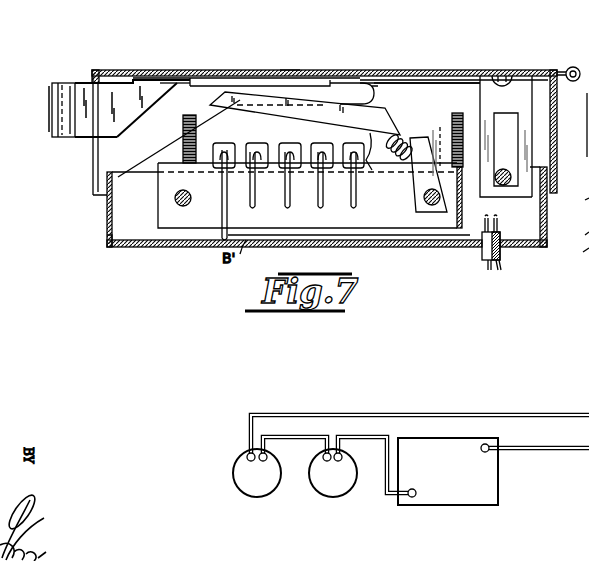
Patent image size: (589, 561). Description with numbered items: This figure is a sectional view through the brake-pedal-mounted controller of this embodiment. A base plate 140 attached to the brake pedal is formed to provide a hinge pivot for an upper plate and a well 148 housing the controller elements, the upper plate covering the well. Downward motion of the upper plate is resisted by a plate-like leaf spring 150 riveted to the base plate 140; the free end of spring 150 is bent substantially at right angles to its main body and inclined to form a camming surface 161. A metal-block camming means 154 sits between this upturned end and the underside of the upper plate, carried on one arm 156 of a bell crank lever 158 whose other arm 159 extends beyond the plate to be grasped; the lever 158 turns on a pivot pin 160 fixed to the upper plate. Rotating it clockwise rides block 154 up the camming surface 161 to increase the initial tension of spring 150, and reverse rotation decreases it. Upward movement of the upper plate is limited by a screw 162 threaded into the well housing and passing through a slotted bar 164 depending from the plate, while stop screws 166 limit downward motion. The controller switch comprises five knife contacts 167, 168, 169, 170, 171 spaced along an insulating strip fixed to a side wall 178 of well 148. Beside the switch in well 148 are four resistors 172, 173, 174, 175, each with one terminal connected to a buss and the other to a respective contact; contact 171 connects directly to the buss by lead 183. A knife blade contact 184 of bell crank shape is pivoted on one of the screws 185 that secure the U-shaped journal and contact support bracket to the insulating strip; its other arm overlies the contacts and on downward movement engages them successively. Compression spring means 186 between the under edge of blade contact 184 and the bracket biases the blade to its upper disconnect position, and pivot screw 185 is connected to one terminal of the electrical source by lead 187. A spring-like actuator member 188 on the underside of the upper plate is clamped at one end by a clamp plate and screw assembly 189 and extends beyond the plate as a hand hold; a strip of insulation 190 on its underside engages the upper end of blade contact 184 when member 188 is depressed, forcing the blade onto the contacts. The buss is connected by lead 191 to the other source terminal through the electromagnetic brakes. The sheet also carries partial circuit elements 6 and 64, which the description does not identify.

The base plate 140 is at (122, 247).
The well 148 is at (110, 235).
The leaf spring 150 is at (162, 154).
The camming means 154 is at (374, 93).
The arm of bell crank lever 156 is at (378, 84).
The bell crank lever 158 is at (293, 68).
The other arm of bell crank lever 159 is at (573, 67).
The pivot pin 160 is at (310, 76).
The camming surface 161 is at (333, 96).
The screw 162 is at (505, 185).
The slotted bar 164 is at (520, 108).
The stop screws 166 is at (188, 117).
The knife contact 167 is at (303, 180).
The knife contact 168 is at (328, 141).
The knife contact 169 is at (294, 138).
The knife contact 170 is at (262, 138).
The knife contact 171 is at (230, 138).
The resistor 172 is at (588, 242).
The resistor 173 is at (588, 228).
The resistor 174 is at (588, 196).
The resistor 175 is at (588, 172).
The side wall 178 is at (112, 208).
The lead 183 is at (218, 190).
The knife blade contact 184 is at (369, 162).
The screws 185 is at (186, 200).
The compression spring means 186 is at (396, 140).
The lead 187 is at (497, 262).
The actuator member 188 is at (190, 72).
The clamp plate and screw assembly 189 is at (512, 78).
The strip of insulation 190 is at (230, 78).
The lead 191 is at (488, 266).
The lamp 6 is at (289, 491).
The control unit 64 is at (440, 492).